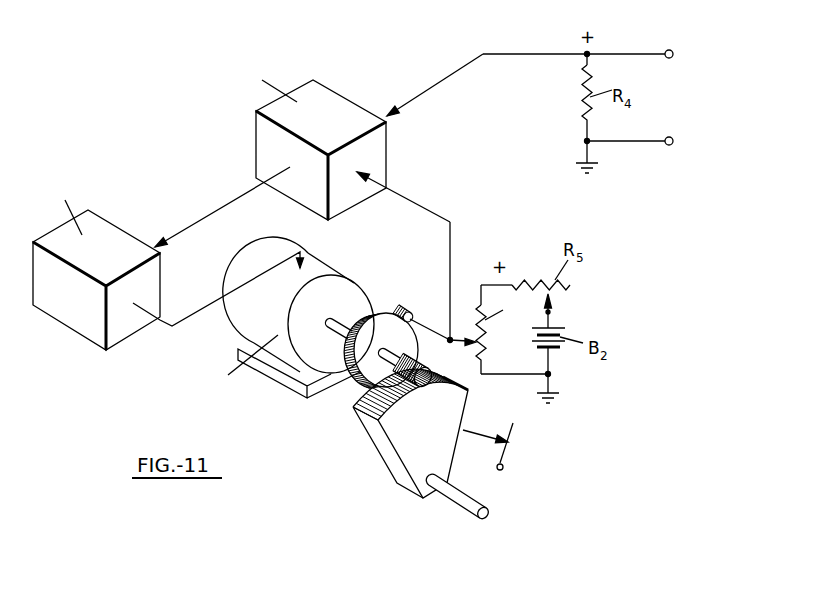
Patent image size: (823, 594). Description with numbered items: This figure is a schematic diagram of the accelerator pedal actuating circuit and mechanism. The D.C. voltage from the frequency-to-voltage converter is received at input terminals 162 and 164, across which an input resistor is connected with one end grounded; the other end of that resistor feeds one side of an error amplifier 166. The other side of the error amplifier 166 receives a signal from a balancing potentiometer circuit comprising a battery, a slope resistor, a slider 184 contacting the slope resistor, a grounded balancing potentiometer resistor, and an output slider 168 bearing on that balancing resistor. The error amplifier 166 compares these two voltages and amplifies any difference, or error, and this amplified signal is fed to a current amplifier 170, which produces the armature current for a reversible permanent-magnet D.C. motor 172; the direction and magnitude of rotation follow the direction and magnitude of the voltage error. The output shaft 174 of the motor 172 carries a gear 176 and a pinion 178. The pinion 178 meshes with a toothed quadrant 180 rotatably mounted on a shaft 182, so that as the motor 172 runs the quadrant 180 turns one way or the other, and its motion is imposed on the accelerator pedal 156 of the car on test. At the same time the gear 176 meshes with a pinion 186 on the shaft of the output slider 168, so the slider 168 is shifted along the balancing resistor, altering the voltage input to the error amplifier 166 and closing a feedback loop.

The accelerator pedal 156 is at (517, 443).
The input terminal 162 is at (672, 51).
The input terminal 164 is at (672, 138).
The error amplifier 166 is at (375, 140).
The output slider 168 is at (478, 353).
The current amplifier 170 is at (83, 317).
The D.C. motor 172 is at (313, 265).
The output shaft 174 is at (342, 330).
The gear 176 is at (368, 375).
The pinion 178 is at (421, 367).
The toothed quadrant 180 is at (387, 448).
The shaft 182 is at (465, 503).
The slider 184 is at (552, 308).
The pinion 186 is at (405, 305).